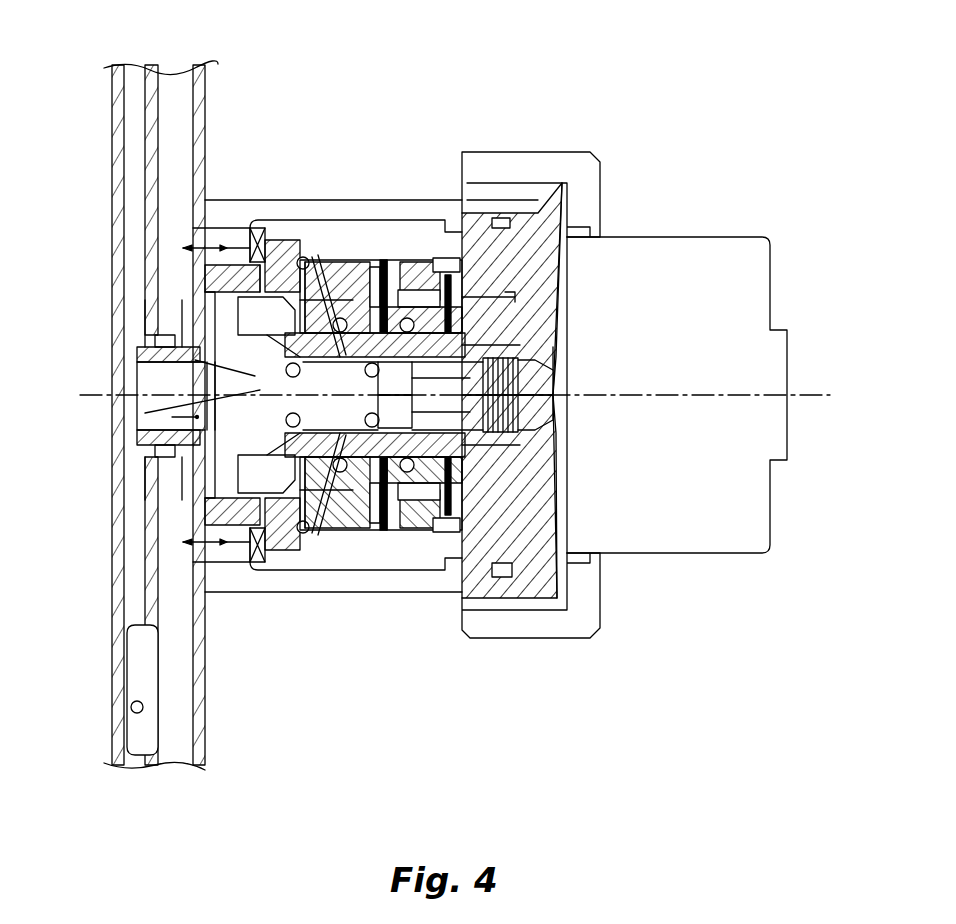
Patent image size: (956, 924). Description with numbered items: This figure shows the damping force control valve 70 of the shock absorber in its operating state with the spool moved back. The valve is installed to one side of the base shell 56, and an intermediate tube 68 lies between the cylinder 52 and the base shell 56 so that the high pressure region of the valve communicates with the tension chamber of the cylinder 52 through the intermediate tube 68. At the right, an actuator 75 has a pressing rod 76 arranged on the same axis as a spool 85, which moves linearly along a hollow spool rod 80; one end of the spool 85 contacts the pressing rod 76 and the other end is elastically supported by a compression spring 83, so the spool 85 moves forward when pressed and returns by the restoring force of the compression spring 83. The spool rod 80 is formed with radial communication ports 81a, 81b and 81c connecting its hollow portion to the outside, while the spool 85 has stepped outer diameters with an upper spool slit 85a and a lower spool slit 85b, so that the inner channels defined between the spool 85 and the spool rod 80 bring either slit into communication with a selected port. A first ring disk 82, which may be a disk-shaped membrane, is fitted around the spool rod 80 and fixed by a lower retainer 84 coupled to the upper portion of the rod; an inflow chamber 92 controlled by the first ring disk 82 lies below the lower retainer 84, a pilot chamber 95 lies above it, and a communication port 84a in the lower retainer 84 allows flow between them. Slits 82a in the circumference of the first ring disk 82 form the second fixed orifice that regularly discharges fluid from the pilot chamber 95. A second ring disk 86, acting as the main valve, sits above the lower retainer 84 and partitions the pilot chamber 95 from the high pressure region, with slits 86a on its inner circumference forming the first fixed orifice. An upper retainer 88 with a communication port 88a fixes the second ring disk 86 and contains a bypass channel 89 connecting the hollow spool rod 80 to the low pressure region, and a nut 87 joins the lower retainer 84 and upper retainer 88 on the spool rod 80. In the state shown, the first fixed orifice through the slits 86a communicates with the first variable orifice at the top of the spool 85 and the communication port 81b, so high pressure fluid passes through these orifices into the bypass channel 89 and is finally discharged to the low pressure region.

The damping force control valve 70 is at (646, 113).
The cylinder 52 is at (113, 91).
The intermediate tube 68 is at (150, 140).
The base shell 56 is at (200, 190).
The nut 87 is at (207, 268).
The compression spring 83 is at (300, 328).
The bypass channel 89 is at (318, 300).
The pilot chamber 95 is at (314, 258).
The upper spool slit 85a is at (320, 258).
The communication port 84a is at (360, 290).
The inflow chamber 92 is at (415, 290).
The lower spool slit 85b is at (462, 370).
The pressing rod 76 is at (553, 347).
The actuator 75 is at (757, 275).
The spool rod 80 is at (230, 362).
The spool 85 is at (335, 402).
The communication port 81a is at (432, 447).
The first ring disk 82 is at (510, 442).
The slits 82a is at (483, 560).
The lower retainer 84 is at (455, 545).
The slits 86a is at (405, 548).
The second ring disk 86 is at (387, 535).
The communication port 81b is at (376, 500).
The upper retainer 88 is at (330, 530).
The communication port 88a is at (283, 555).
The communication port 81c is at (238, 560).